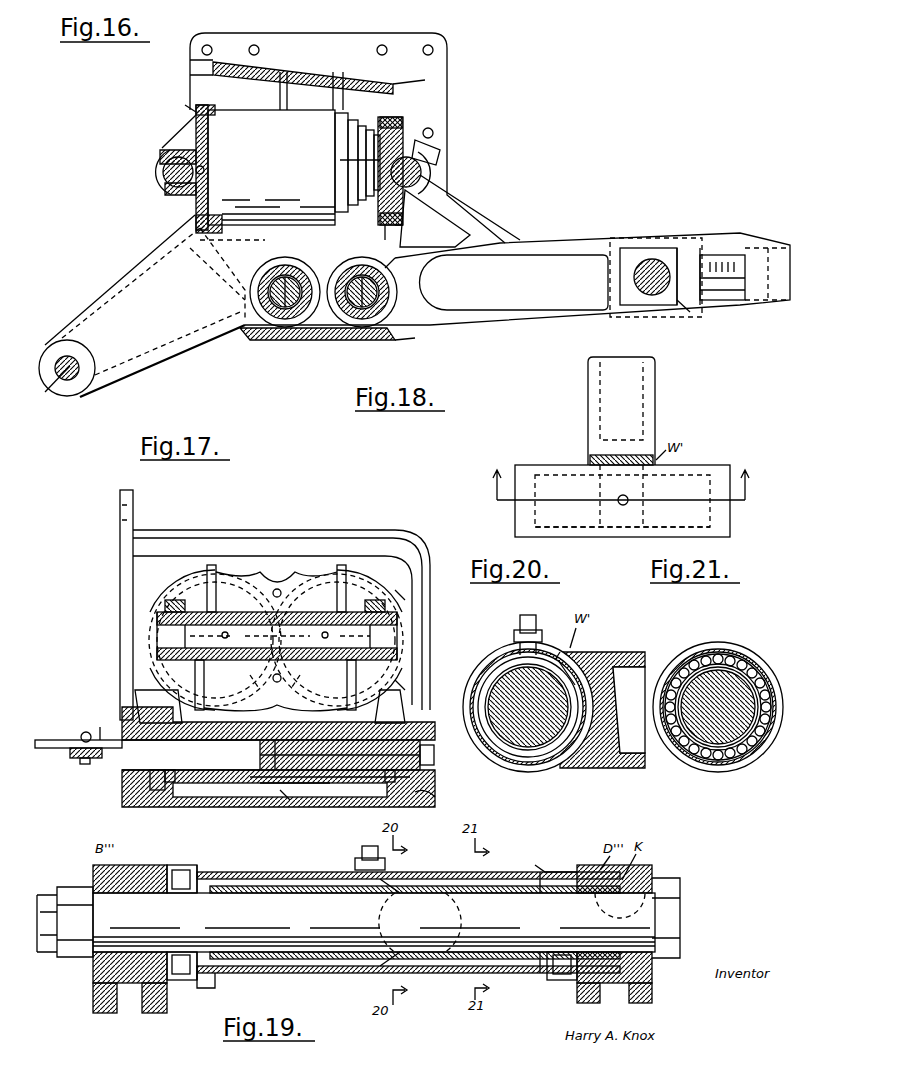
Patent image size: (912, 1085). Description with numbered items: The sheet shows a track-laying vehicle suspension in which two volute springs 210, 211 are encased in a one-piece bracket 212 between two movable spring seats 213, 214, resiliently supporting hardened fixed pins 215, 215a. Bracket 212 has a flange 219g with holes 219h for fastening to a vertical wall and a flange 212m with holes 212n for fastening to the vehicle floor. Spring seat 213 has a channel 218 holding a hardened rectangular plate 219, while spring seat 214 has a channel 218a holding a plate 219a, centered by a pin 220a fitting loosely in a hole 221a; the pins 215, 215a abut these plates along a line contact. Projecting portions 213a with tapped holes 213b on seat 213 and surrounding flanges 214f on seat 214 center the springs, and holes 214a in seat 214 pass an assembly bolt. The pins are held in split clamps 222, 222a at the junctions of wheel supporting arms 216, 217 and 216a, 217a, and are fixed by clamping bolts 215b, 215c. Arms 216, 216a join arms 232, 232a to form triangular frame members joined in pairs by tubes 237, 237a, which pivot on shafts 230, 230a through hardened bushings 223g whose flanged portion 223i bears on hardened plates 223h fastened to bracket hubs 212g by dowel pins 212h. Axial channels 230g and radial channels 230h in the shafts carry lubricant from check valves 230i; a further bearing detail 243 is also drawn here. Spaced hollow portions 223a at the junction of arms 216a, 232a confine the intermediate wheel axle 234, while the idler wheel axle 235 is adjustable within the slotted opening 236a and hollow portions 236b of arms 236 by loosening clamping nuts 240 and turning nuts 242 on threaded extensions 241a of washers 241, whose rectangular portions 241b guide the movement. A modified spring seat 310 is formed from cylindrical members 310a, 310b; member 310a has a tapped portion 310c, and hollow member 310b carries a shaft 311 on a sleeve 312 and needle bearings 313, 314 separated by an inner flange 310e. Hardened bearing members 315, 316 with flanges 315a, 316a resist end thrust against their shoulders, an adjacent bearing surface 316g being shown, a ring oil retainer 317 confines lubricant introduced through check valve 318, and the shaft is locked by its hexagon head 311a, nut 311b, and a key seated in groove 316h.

In FIG. 16, the bracket 212 is at (347, 138).
In FIG. 17, the bracket 212 is at (120, 530).
In FIG. 16, the flange 219g is at (345, 48).
In FIG. 16, the holes 219h is at (387, 48).
In FIG. 17, the holes 219h is at (135, 516).
In FIG. 16, the volute spring 211 is at (275, 148).
In FIG. 17, the volute spring 211 is at (240, 588).
In FIG. 16, the spring seat 214 is at (196, 120).
In FIG. 17, the spring seat 214 is at (178, 595).
In FIG. 16, the flanges 214f is at (208, 110).
In FIG. 17, the flanges 214f is at (400, 592).
In FIG. 16, the holes 214a is at (208, 131).
In FIG. 17, the holes 214a is at (278, 588).
In FIG. 16, the pin 215a is at (165, 180).
In FIG. 17, the pin 215a is at (165, 640).
In FIG. 16, the clamping bolt 215c is at (150, 167).
In FIG. 17, the clamping bolt 215c is at (160, 621).
In FIG. 16, the split clamp 222a is at (160, 152).
In FIG. 17, the split clamp 222a is at (168, 612).
In FIG. 16, the channel 218a is at (182, 200).
In FIG. 17, the channel 218a is at (243, 679).
In FIG. 16, the hardened rectangular plate 219a is at (204, 170).
In FIG. 17, the hardened rectangular plate 219a is at (277, 636).
In FIG. 16, the hardened rectangular plate 219 is at (340, 172).
In FIG. 16, the projecting portions 213a is at (340, 160).
In FIG. 16, the spring seat 213 is at (398, 122).
In FIG. 16, the tapped holes 213b is at (405, 130).
In FIG. 16, the pin 215 is at (422, 175).
In FIG. 16, the clamping bolt 215b is at (436, 160).
In FIG. 16, the split clamp 222 is at (428, 148).
In FIG. 16, the wheel supporting arm 216 is at (470, 222).
In FIG. 16, the wheel supporting arm 217 is at (400, 236).
In FIG. 16, the channel 218 is at (369, 228).
In FIG. 16, the arm 236 is at (552, 256).
In FIG. 16, the slot 236a is at (514, 282).
In FIG. 16, the arm 232 is at (415, 267).
In FIG. 16, the tube 237 is at (415, 272).
In FIG. 16, the tube 237a is at (290, 258).
In FIG. 17, the tube 237a is at (285, 797).
In FIG. 16, the shaft 230a is at (300, 316).
In FIG. 17, the shaft 230a is at (296, 780).
In FIG. 16, the shaft 230 is at (375, 318).
In FIG. 16, the clamping nuts 240 is at (620, 278).
In FIG. 16, the axle 235 is at (656, 266).
In FIG. 16, the washer 241 is at (688, 258).
In FIG. 16, the threaded washer extension 241a is at (720, 262).
In FIG. 16, the portion 241b is at (680, 305).
In FIG. 16, the hollow portion 236b is at (710, 300).
In FIG. 16, the nut 242 is at (775, 302).
In FIG. 16, the wheel supporting arm 216a is at (115, 250).
In FIG. 16, the wheel supporting arm 217a is at (190, 260).
In FIG. 17, the wheel supporting arm 217a is at (205, 715).
In FIG. 16, the axle 234 is at (82, 362).
In FIG. 16, the arm 232a is at (188, 352).
In FIG. 16, the hollow portions 223a is at (75, 390).
In FIG. 17, the volute spring 210 is at (305, 588).
In FIG. 17, the pin 220a is at (226, 632).
In FIG. 17, the hole 221a is at (313, 679).
In FIG. 17, the cylindrical member 310a is at (170, 690).
In FIG. 18, the cylindrical member 310a is at (650, 400).
In FIG. 20, the cylindrical member 310a is at (632, 655).
In FIG. 19, the cylindrical member 310a is at (418, 905).
In FIG. 17, the dowel pins 212h is at (128, 718).
In FIG. 17, the bracket hubs 212g is at (122, 798).
In FIG. 17, the holes 212n is at (80, 742).
In FIG. 17, the flange 212m is at (85, 762).
In FIG. 17, the radially extending channels 230h is at (317, 755).
In FIG. 17, the hardened bushings 223g is at (345, 818).
In FIG. 17, the lubricating fluid check valve 230i is at (434, 756).
In FIG. 17, the cap 243 is at (435, 795).
In FIG. 17, the hardened rings or plates 223h is at (160, 792).
In FIG. 17, the flanged portion 223i is at (175, 788).
In FIG. 17, the axially extending channel 230g is at (275, 786).
In FIG. 18, the spring seat 310 is at (580, 465).
In FIG. 19, the spring seat 310 is at (505, 893).
In FIG. 18, the tapped portion 310c is at (645, 440).
In FIG. 20, the tapped portion 310c is at (624, 710).
In FIG. 18, the inner flange 310e is at (615, 490).
In FIG. 20, the inner flange 310e is at (568, 662).
In FIG. 19, the inner flange 310e is at (390, 876).
In FIG. 18, the cylindrical member 310b is at (630, 530).
In FIG. 20, the cylindrical member 310b is at (490, 648).
In FIG. 21, the cylindrical member 310b is at (748, 760).
In FIG. 19, the cylindrical member 310b is at (325, 974).
In FIG. 20, the sleeve 312 is at (558, 748).
In FIG. 21, the sleeve 312 is at (757, 680).
In FIG. 19, the sleeve 312 is at (452, 970).
In FIG. 20, the shaft 311 is at (528, 745).
In FIG. 21, the shaft 311 is at (700, 745).
In FIG. 19, the shaft 311 is at (405, 940).
In FIG. 20, the lubricating fluid check valve 318 is at (538, 625).
In FIG. 19, the lubricating fluid check valve 318 is at (362, 855).
In FIG. 21, the needle bearings 313 is at (738, 660).
In FIG. 19, the needle bearings 313 is at (472, 886).
In FIG. 19, the nut 311b is at (72, 962).
In FIG. 19, the shaft hexagon head 311a is at (672, 920).
In FIG. 19, the hardened bearing member 316 is at (188, 895).
In FIG. 19, the flange 316a is at (193, 868).
In FIG. 19, the oil retainer 317 is at (185, 980).
In FIG. 19, the bearing wall 316g is at (205, 876).
In FIG. 19, the needle bearings 314 is at (308, 868).
In FIG. 19, the hardened bearing member 315 is at (560, 893).
In FIG. 19, the flange 315a is at (542, 866).
In FIG. 19, the groove 316h is at (650, 880).